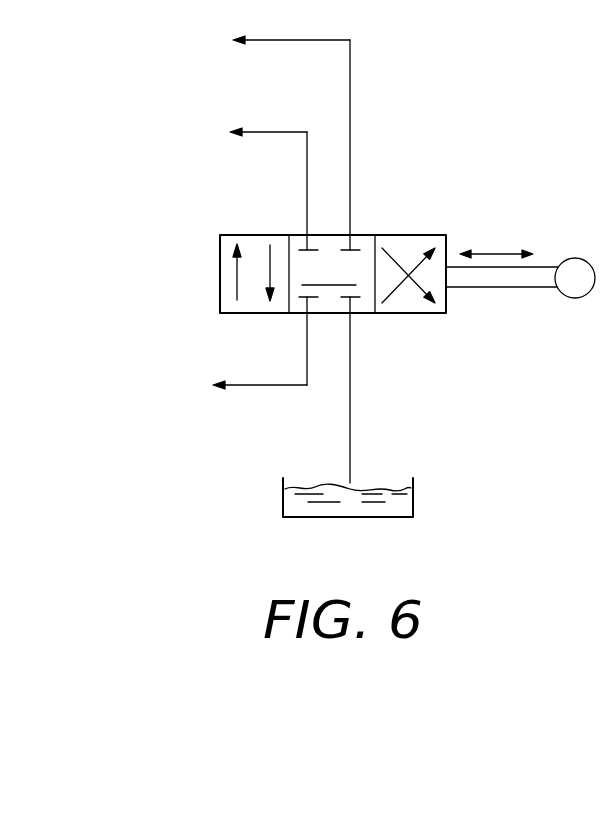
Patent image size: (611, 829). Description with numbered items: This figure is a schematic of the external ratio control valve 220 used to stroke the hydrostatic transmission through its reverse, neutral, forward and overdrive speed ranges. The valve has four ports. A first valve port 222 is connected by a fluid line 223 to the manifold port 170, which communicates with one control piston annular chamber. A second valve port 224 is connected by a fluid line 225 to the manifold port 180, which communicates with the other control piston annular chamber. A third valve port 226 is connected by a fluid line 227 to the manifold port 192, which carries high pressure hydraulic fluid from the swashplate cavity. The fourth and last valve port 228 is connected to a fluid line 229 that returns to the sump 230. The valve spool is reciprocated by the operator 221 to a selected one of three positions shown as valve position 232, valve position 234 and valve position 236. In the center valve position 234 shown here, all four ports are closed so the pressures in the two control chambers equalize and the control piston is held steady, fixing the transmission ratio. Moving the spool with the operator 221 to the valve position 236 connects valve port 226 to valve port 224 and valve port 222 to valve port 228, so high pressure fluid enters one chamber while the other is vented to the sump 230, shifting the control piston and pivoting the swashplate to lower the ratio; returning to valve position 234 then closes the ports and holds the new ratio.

The manifold port 180 is at (216, 42).
The manifold port 170 is at (192, 128).
The manifold port 192 is at (181, 383).
The fluid line 225 is at (350, 100).
The fluid line 223 is at (288, 135).
The first valve port 222 is at (301, 235).
The second valve port 224 is at (357, 235).
The ratio control valve 220 is at (418, 207).
The valve position 236 is at (415, 237).
The valve position 232 is at (253, 270).
The valve position 234 is at (329, 270).
The third valve port 226 is at (301, 313).
The fourth valve port 228 is at (360, 313).
The fluid line 227 is at (275, 387).
The fluid line 229 is at (352, 425).
The sump 230 is at (415, 497).
The operator 221 is at (575, 298).